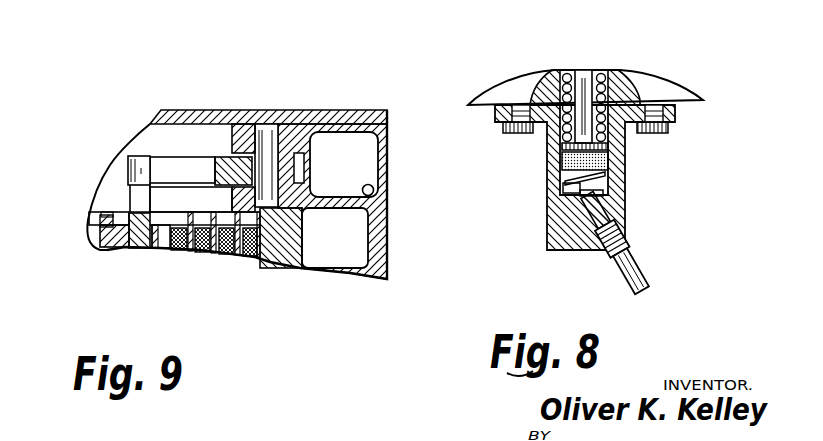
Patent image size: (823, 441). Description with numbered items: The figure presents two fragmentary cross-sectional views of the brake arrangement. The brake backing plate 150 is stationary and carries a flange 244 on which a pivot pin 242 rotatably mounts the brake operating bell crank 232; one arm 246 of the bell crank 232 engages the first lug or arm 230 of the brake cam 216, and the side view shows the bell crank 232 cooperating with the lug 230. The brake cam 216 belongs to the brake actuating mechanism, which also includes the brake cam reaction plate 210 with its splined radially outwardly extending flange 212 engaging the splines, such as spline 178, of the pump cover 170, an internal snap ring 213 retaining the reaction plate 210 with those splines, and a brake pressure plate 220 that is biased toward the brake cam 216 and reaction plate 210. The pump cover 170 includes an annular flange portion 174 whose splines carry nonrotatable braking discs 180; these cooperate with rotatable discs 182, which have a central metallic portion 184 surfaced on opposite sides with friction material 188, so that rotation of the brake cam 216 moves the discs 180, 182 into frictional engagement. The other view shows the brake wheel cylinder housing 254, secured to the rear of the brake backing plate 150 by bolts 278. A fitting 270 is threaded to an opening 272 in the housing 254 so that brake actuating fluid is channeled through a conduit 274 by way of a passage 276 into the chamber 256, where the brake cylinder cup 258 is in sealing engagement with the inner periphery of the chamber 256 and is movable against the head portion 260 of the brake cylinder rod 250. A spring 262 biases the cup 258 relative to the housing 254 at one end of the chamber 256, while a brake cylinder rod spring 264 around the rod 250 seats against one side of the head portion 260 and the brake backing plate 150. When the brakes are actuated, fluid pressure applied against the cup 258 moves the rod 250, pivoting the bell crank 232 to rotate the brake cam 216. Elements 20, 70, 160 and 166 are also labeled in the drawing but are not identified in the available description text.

In FIG. 9, the housing 20 is at (388, 110).
In FIG. 8, the housing 20 is at (687, 88).
In FIG. 9, the carrier 70 is at (352, 0).
In FIG. 9, the brake backing plate 150 is at (380, 262).
In FIG. 8, the brake backing plate 150 is at (520, 82).
In FIG. 9, the top wall 160 is at (242, 112).
In FIG. 9, the block 166 is at (280, 257).
In FIG. 9, the pump cover 170 is at (278, 229).
In FIG. 9, the annular flange portion 174 is at (88, 215).
In FIG. 9, the spline 178 is at (182, 211).
In FIG. 9, the nonrotatable braking discs 180 is at (213, 253).
In FIG. 9, the rotatable discs 182 is at (208, 253).
In FIG. 9, the central metallic portion 184 is at (178, 252).
In FIG. 9, the friction material 188 is at (256, 255).
In FIG. 9, the brake cam reaction plate 210 is at (102, 248).
In FIG. 9, the splined radially outwardly extending flange 212 is at (107, 212).
In FIG. 9, the internal snap ring 213 is at (99, 230).
In FIG. 9, the brake cam 216 is at (137, 248).
In FIG. 9, the brake pressure plate 220 is at (160, 253).
In FIG. 9, the first lug or arm 230 is at (130, 190).
In FIG. 9, the bell crank 232 is at (163, 163).
In FIG. 9, the pivot pin 242 is at (270, 123).
In FIG. 9, the flange 244 is at (232, 137).
In FIG. 9, the arm 246 is at (160, 166).
In FIG. 8, the brake cylinder rod 250 is at (580, 70).
In FIG. 8, the brake wheel cylinder housing 254 is at (553, 213).
In FIG. 8, the chamber 256 is at (563, 185).
In FIG. 8, the brake cylinder cup 258 is at (563, 160).
In FIG. 8, the head portion 260 is at (610, 147).
In FIG. 8, the spring 262 is at (610, 180).
In FIG. 8, the brake cylinder rod spring 264 is at (598, 70).
In FIG. 8, the fitting 270 is at (613, 255).
In FIG. 8, the opening 272 is at (580, 245).
In FIG. 8, the conduit 274 is at (644, 272).
In FIG. 8, the passage 276 is at (600, 195).
In FIG. 8, the bolts 278 is at (503, 128).